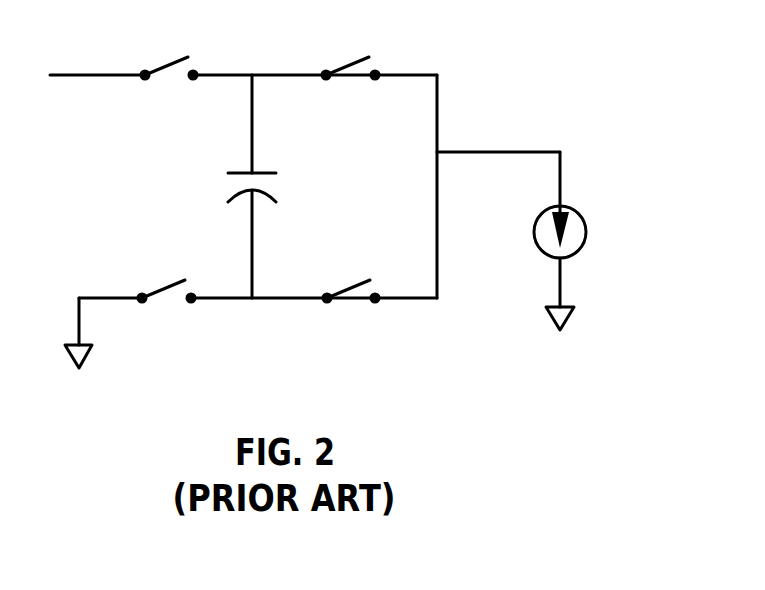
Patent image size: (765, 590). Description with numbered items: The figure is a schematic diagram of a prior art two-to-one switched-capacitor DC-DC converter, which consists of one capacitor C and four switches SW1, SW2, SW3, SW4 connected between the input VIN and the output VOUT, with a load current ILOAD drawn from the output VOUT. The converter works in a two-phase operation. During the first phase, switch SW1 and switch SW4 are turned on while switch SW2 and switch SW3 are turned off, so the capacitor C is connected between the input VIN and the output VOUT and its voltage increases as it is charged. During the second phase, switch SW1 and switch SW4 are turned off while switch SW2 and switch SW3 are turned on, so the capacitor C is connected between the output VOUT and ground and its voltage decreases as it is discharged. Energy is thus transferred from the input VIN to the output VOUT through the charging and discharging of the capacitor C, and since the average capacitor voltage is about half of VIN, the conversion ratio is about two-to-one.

The switch 1 SW1 is at (187, 39).
The switch 2 SW2 is at (371, 39).
The switch 3 SW3 is at (148, 259).
The switch 4 SW4 is at (351, 259).
The capacitor C is at (266, 186).
The input VIN is at (73, 40).
The output VOUT is at (524, 115).
The load current source ILOAD is at (611, 246).